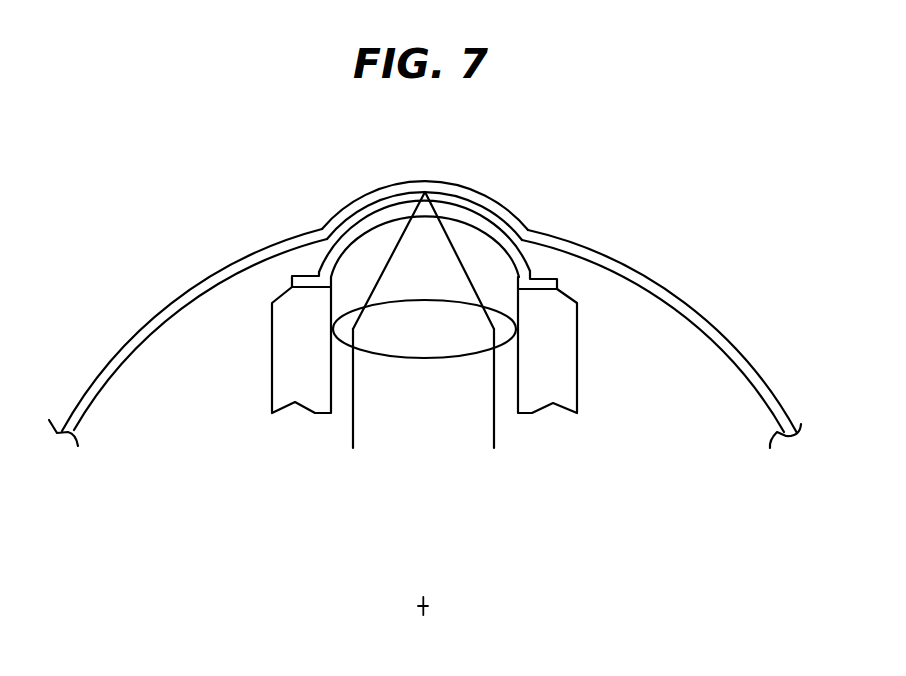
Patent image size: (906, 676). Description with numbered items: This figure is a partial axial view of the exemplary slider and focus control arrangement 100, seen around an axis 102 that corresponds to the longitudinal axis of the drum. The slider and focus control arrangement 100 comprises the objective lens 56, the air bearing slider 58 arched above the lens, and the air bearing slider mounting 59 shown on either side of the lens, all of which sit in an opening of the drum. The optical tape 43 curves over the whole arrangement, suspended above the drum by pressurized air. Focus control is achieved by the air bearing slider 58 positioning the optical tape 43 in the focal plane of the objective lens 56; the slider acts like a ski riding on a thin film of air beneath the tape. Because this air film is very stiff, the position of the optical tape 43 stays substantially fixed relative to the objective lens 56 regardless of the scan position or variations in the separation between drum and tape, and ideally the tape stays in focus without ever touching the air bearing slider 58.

The slider and focus control arrangement 100 is at (310, 138).
The air bearing slider 58 is at (470, 218).
The optical tape 43 is at (174, 298).
The air bearing slider mounting 59 is at (287, 344).
The objective lens 56 is at (421, 340).
The axis 102 is at (425, 607).